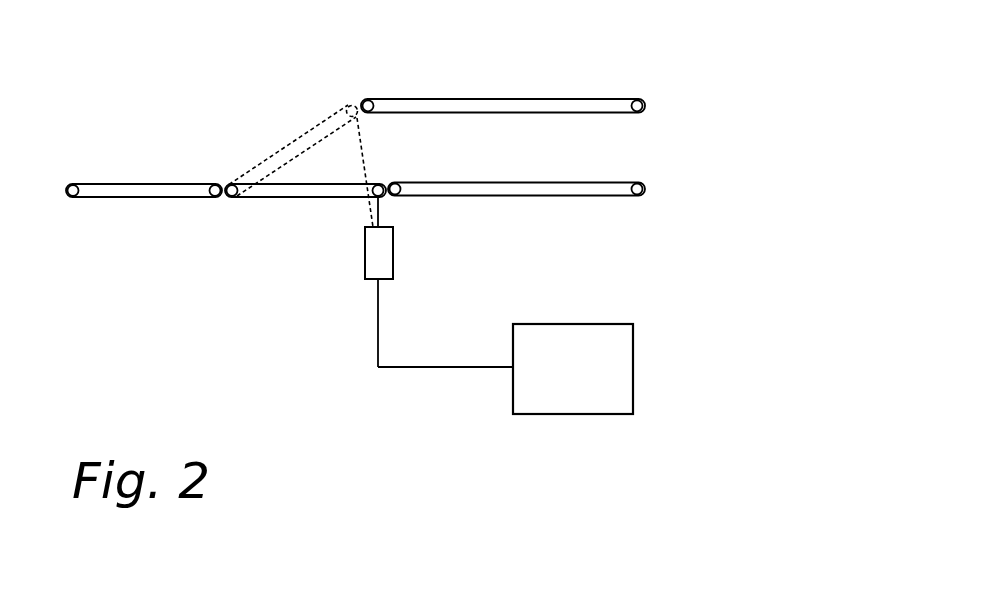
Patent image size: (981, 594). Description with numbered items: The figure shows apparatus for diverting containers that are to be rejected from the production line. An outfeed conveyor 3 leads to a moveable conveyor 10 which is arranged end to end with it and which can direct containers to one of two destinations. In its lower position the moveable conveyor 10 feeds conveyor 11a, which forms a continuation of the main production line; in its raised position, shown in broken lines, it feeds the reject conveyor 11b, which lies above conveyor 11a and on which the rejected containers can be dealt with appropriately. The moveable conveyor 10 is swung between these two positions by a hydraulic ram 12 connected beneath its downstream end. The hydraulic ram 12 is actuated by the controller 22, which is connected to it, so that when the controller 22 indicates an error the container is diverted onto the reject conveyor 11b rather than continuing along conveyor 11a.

The outfeed conveyor 3 is at (132, 197).
The moveable conveyor 10 is at (303, 197).
The conveyor 11a is at (527, 182).
The reject conveyor 11b is at (480, 99).
The hydraulic ram 12 is at (395, 258).
The controller 22 is at (633, 373).